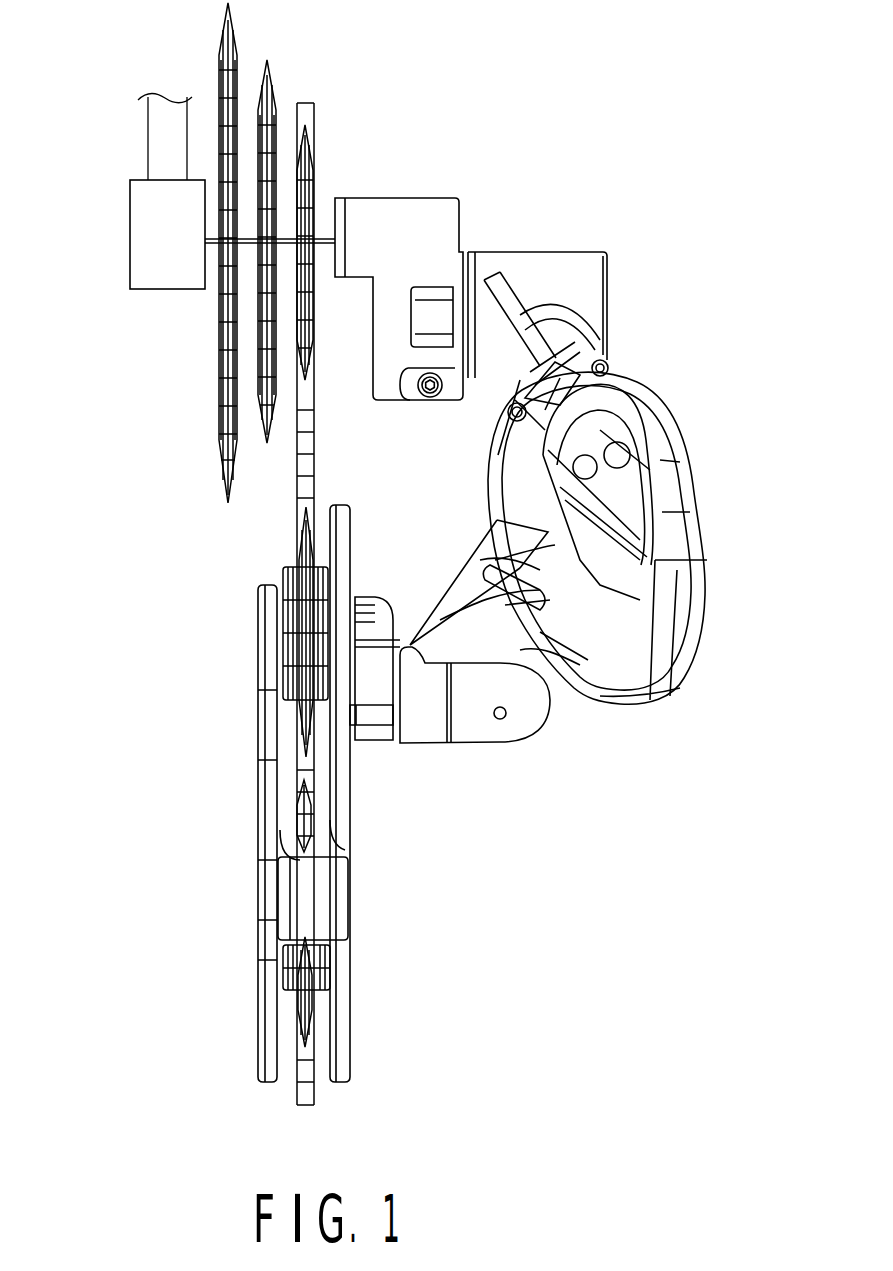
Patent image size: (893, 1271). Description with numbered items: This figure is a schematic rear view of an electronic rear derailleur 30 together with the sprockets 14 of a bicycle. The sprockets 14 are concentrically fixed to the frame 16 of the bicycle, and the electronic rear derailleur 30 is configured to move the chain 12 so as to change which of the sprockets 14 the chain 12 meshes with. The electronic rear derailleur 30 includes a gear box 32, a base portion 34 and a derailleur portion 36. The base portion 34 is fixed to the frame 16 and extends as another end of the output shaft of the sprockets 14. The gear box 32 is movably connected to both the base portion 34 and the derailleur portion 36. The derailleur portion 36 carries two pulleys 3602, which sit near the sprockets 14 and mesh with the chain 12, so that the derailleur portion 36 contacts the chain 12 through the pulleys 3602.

The chain 12 is at (314, 450).
The sprocket 14 is at (217, 435).
The frame 16 is at (145, 234).
The electronic rear derailleur 30 is at (727, 333).
The gear box 32 is at (632, 660).
The base portion 34 is at (551, 272).
The derailleur portion 36 is at (467, 720).
The pulley 3602 is at (285, 652).